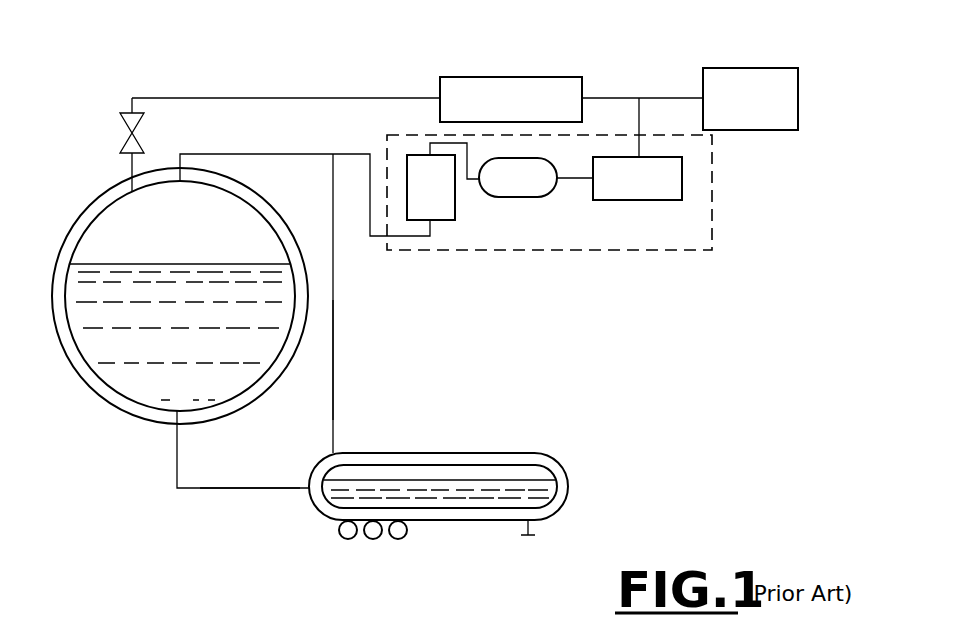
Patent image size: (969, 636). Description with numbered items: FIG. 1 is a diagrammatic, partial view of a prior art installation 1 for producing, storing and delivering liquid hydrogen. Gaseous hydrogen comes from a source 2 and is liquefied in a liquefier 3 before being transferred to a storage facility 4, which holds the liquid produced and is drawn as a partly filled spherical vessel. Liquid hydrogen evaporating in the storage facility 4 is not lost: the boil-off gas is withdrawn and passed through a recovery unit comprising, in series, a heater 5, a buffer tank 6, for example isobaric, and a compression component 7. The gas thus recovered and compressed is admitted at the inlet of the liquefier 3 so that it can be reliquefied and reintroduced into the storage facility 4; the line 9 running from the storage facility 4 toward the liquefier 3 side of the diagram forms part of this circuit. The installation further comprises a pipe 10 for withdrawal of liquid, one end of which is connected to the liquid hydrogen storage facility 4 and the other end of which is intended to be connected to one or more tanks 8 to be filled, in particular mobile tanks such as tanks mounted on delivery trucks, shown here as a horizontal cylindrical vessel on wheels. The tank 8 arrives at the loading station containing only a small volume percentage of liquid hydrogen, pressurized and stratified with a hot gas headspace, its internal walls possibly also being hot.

The heating system (prior art) 1 is at (622, 382).
The source of gaseous hydrogen 2 is at (732, 80).
The liquefier 3 is at (485, 100).
The storage facility 4 is at (95, 375).
The heater 5 is at (445, 220).
The buffer tank 6 is at (530, 197).
The compression component 7 is at (665, 182).
The tank 8 is at (560, 497).
The supply line 9 is at (336, 361).
The pipe for withdrawal of liquid 10 is at (225, 490).